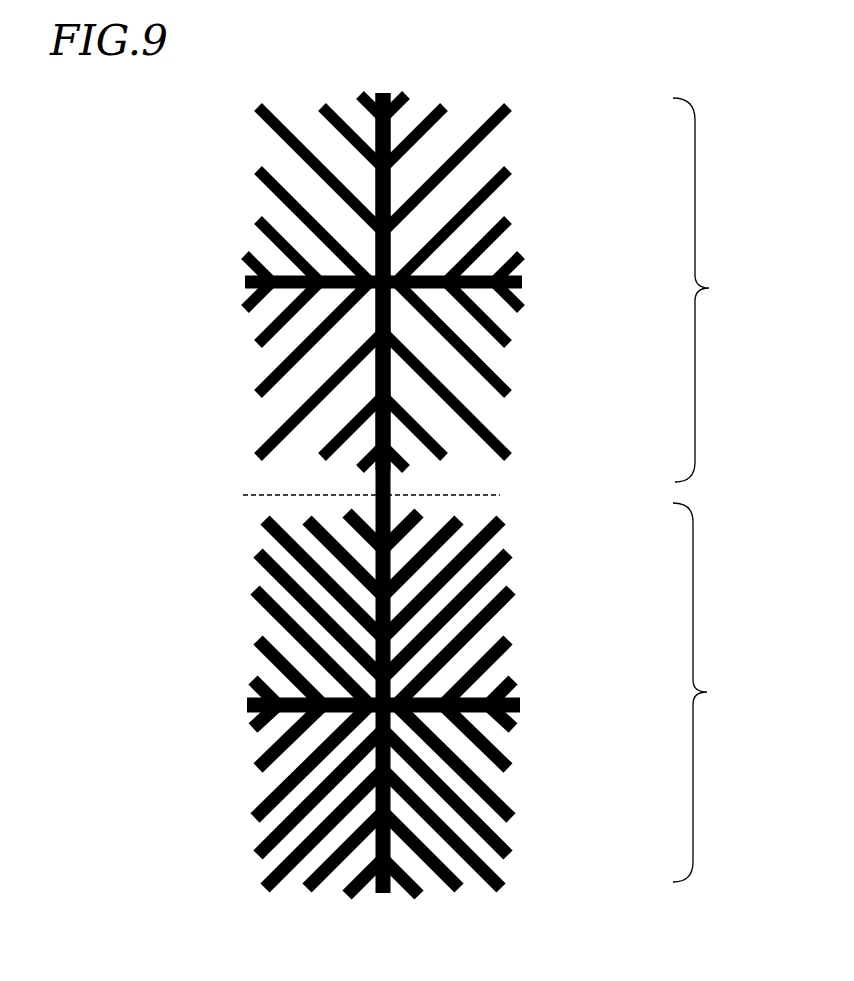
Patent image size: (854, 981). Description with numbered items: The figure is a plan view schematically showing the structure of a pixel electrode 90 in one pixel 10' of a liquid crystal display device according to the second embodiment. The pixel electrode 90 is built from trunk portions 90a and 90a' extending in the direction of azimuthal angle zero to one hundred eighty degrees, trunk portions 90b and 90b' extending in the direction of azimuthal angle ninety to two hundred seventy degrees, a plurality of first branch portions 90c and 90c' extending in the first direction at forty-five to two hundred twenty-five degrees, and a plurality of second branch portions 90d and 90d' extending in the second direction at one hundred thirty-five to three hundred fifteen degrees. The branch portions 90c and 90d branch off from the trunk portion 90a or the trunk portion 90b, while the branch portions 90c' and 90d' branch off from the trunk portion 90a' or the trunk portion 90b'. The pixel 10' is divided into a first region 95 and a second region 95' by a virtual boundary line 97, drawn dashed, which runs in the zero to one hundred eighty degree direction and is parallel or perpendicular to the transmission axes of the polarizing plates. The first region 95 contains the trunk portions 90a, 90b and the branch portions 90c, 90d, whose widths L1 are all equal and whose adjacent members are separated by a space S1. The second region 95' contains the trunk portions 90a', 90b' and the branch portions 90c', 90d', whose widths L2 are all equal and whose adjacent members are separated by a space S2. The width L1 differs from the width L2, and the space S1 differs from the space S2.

The pixel 10' is at (448, 466).
The pixel electrode 90 is at (560, 130).
The trunk portion 90a is at (460, 266).
The trunk portion 90b is at (409, 262).
The branch portions 90c is at (384, 282).
The branch portions 90d is at (386, 282).
The first region 95 is at (711, 290).
The boundary line 97 is at (500, 495).
The trunk portion 90a' is at (461, 691).
The trunk portion 90b' is at (398, 718).
The branch portions 90c' is at (386, 704).
The branch portions 90d' is at (389, 704).
The second region 95' is at (714, 692).
The first line width L1 is at (504, 164).
The first slit width S1 is at (484, 210).
The second line width L2 is at (499, 552).
The second slit width S2 is at (498, 636).